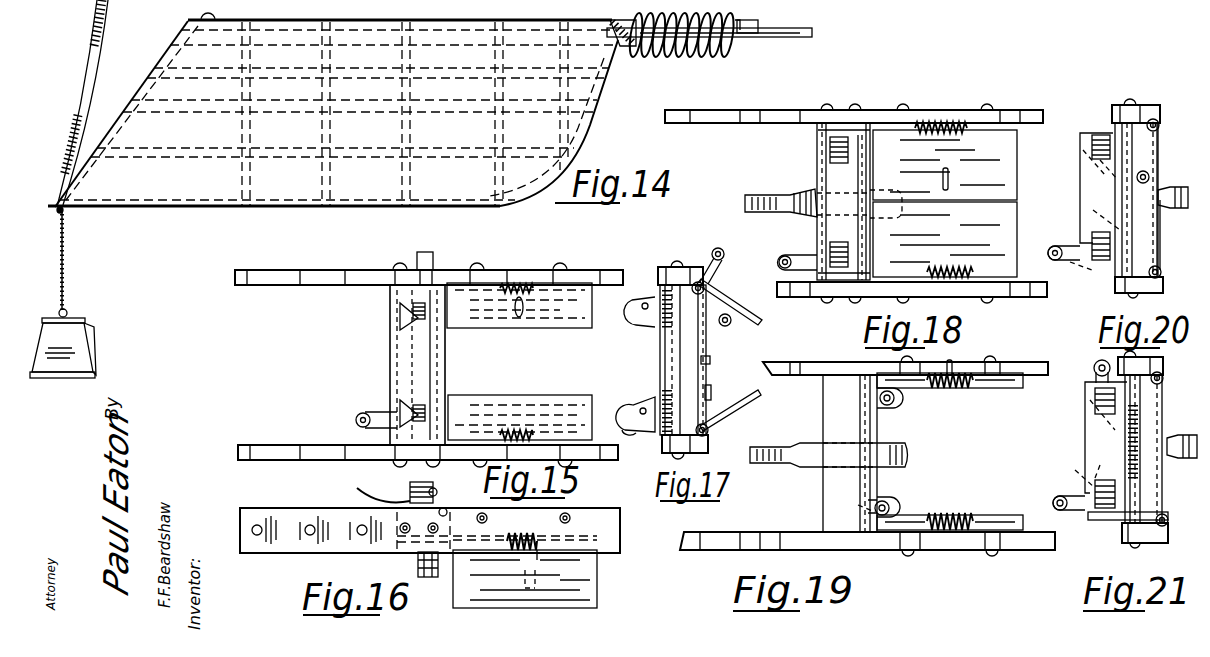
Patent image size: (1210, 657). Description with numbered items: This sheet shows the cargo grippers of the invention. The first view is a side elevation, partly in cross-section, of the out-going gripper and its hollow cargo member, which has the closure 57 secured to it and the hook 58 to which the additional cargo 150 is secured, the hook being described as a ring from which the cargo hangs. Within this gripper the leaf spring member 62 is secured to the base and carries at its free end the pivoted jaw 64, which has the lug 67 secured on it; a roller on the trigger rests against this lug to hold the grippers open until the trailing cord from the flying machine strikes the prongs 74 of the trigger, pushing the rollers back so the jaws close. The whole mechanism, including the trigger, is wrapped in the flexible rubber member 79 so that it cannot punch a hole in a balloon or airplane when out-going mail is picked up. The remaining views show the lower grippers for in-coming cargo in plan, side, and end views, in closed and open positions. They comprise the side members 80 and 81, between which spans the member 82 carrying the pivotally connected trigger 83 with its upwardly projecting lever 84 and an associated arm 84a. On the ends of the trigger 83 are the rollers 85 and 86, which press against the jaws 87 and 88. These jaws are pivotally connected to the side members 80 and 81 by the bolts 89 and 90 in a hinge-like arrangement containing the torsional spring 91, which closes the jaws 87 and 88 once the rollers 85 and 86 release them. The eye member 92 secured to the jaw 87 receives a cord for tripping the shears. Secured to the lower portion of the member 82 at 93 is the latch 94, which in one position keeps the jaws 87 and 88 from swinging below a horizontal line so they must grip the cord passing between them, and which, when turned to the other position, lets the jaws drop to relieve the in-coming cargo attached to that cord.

In FIG. 14, the closure 57 is at (103, 20).
In FIG. 14, the hook 58 is at (72, 213).
In FIG. 14, the leaf spring member 62 is at (650, 58).
In FIG. 14, the jaw 64 is at (798, 27).
In FIG. 14, the lug 67 is at (760, 24).
In FIG. 14, the prongs 74 is at (740, 20).
In FIG. 14, the flexible rubber member 79 is at (670, 6).
In FIG. 15, the side member 80 is at (335, 271).
In FIG. 17, the side member 80 is at (662, 267).
In FIG. 18, the side member 80 is at (803, 109).
In FIG. 19, the side member 80 is at (838, 359).
In FIG. 20, the side member 80 is at (1147, 112).
In FIG. 21, the side member 80 is at (1140, 363).
In FIG. 15, the side member 81 is at (275, 452).
In FIG. 16, the side member 81 is at (430, 530).
In FIG. 17, the side member 81 is at (662, 448).
In FIG. 18, the side member 81 is at (818, 293).
In FIG. 19, the side member 81 is at (790, 532).
In FIG. 20, the side member 81 is at (1139, 287).
In FIG. 21, the side member 81 is at (1145, 535).
In FIG. 15, the member 82 is at (392, 297).
In FIG. 15, the trigger 83 is at (403, 358).
In FIG. 15, the lever 84 is at (360, 414).
In FIG. 16, the lever 84 is at (410, 498).
In FIG. 17, the lever 84 is at (624, 428).
In FIG. 18, the lever 84 is at (806, 246).
In FIG. 19, the lever 84 is at (876, 507).
In FIG. 20, the lever 84 is at (1078, 250).
In FIG. 21, the lever 84 is at (1056, 504).
In FIG. 15, the lever arm 84a is at (375, 411).
In FIG. 16, the lever arm 84a is at (362, 488).
In FIG. 18, the lever arm 84a is at (786, 259).
In FIG. 19, the lever arm 84a is at (858, 510).
In FIG. 20, the lever arm 84a is at (1087, 265).
In FIG. 21, the lever arm 84a is at (1068, 495).
In FIG. 15, the roller 85 is at (410, 315).
In FIG. 17, the roller 85 is at (657, 297).
In FIG. 18, the roller 85 is at (832, 160).
In FIG. 19, the roller 85 is at (896, 400).
In FIG. 20, the roller 85 is at (1095, 158).
In FIG. 21, the roller 85 is at (1107, 402).
In FIG. 15, the roller 86 is at (430, 403).
In FIG. 17, the roller 86 is at (645, 400).
In FIG. 18, the roller 86 is at (840, 243).
In FIG. 19, the roller 86 is at (895, 503).
In FIG. 20, the roller 86 is at (1098, 232).
In FIG. 21, the roller 86 is at (1098, 480).
In FIG. 15, the jaw 87 is at (557, 322).
In FIG. 17, the jaw 87 is at (757, 322).
In FIG. 18, the jaw 87 is at (945, 165).
In FIG. 19, the jaw 87 is at (1020, 383).
In FIG. 20, the jaw 87 is at (1160, 138).
In FIG. 15, the jaw 88 is at (530, 403).
In FIG. 16, the jaw 88 is at (524, 579).
In FIG. 17, the jaw 88 is at (735, 424).
In FIG. 18, the jaw 88 is at (945, 239).
In FIG. 19, the jaw 88 is at (1022, 522).
In FIG. 20, the jaw 88 is at (1155, 245).
In FIG. 21, the jaw 88 is at (1115, 520).
In FIG. 17, the bolt 89 is at (716, 280).
In FIG. 17, the bolt 90 is at (709, 437).
In FIG. 20, the bolt 90 is at (1162, 265).
In FIG. 15, the torsional spring 91 is at (508, 286).
In FIG. 16, the torsional spring 91 is at (545, 525).
In FIG. 18, the torsional spring 91 is at (918, 126).
In FIG. 19, the torsional spring 91 is at (970, 389).
In FIG. 15, the eye member 92 is at (517, 318).
In FIG. 16, the eye member 92 is at (540, 593).
In FIG. 17, the eye member 92 is at (725, 327).
In FIG. 18, the eye member 92 is at (943, 178).
In FIG. 19, the eye member 92 is at (968, 362).
In FIG. 20, the eye member 92 is at (1148, 165).
In FIG. 21, the eye member 92 is at (1101, 361).
In FIG. 17, the latch attachment point 93 is at (712, 362).
In FIG. 16, the latch 94 is at (418, 566).
In FIG. 17, the latch 94 is at (712, 393).
In FIG. 18, the latch 94 is at (763, 196).
In FIG. 19, the latch 94 is at (893, 440).
In FIG. 20, the latch 94 is at (1180, 187).
In FIG. 21, the latch 94 is at (1188, 435).
In FIG. 14, the additional cargo 150 is at (75, 346).